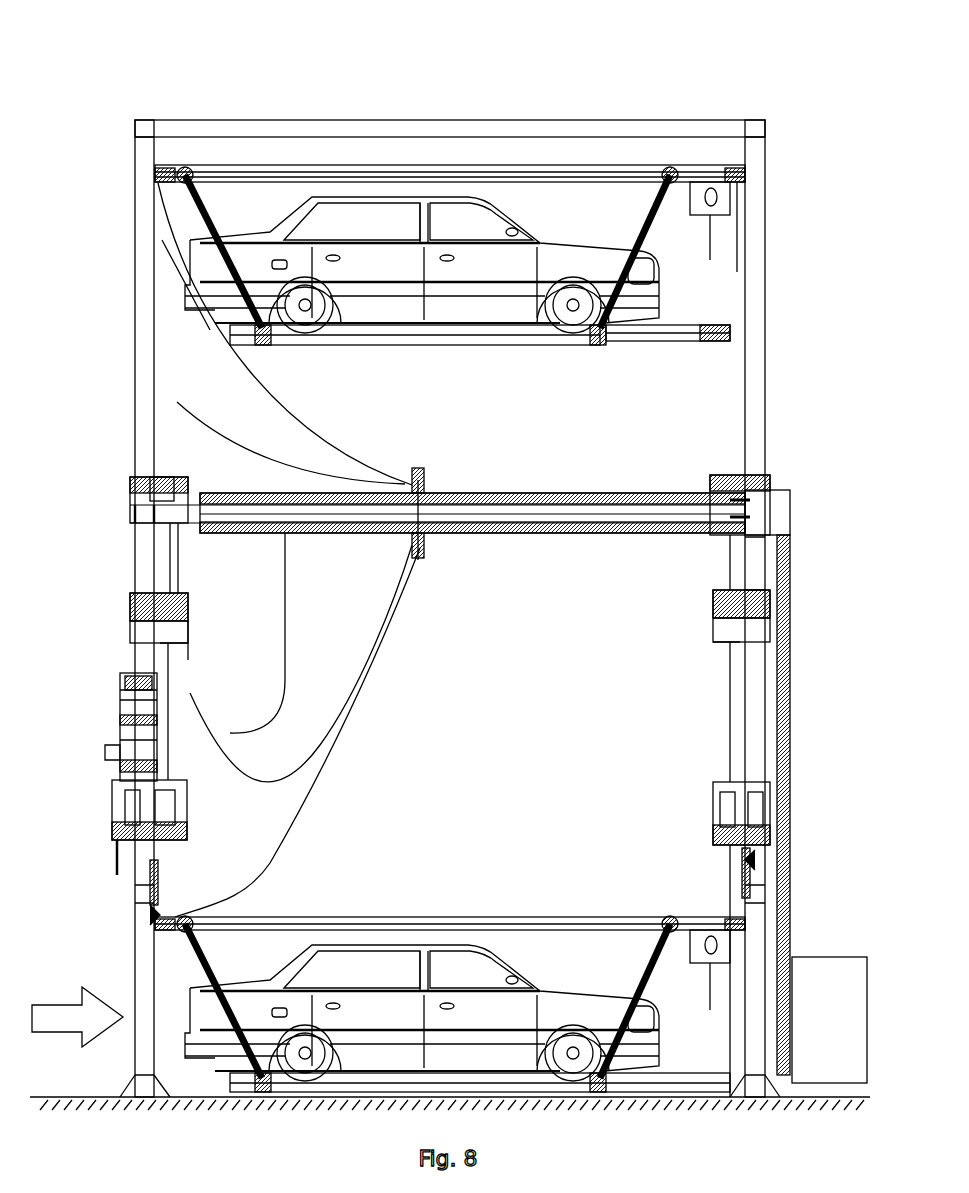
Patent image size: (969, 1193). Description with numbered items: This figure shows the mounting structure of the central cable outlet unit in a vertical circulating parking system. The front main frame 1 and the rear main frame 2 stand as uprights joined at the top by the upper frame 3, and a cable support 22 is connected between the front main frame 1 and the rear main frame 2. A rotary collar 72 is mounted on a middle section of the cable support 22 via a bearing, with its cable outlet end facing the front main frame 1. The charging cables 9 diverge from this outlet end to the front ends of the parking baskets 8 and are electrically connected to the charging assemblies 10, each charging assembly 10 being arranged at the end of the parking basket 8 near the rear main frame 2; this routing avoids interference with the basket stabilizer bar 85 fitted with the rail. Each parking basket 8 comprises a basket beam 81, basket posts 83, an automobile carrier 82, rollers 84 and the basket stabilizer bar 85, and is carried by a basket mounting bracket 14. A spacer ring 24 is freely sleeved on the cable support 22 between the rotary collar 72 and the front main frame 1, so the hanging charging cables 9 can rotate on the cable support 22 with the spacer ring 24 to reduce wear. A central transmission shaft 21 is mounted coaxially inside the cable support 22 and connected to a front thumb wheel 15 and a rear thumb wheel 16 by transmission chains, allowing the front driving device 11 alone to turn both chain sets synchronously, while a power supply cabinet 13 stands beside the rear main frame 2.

The front main frame 1 is at (458, 581).
The rear main frame 2 is at (760, 315).
The upper frame 3 is at (275, 128).
The parking basket 8 is at (504, 230).
The charging cable 9 is at (146, 327).
The charging assembly 10 is at (745, 182).
The front driving device 11 is at (130, 735).
The power supply cabinet 13 is at (838, 1032).
The basket mounting bracket 14 is at (765, 890).
The front thumb wheel 15 is at (130, 820).
The rear thumb wheel 16 is at (770, 810).
The central transmission shaft 21 is at (545, 515).
The cable support 22 is at (737, 495).
The spacer ring 24 is at (217, 492).
The rotary collar 72 is at (426, 481).
The basket beam 81 is at (398, 170).
The automobile carrier 82 is at (365, 337).
The basket post 83 is at (230, 268).
The roller 84 is at (728, 328).
The basket stabilizer bar 85 is at (652, 336).